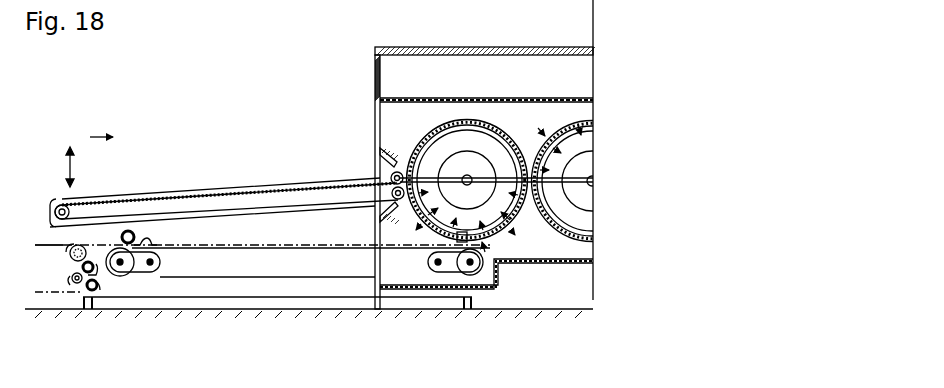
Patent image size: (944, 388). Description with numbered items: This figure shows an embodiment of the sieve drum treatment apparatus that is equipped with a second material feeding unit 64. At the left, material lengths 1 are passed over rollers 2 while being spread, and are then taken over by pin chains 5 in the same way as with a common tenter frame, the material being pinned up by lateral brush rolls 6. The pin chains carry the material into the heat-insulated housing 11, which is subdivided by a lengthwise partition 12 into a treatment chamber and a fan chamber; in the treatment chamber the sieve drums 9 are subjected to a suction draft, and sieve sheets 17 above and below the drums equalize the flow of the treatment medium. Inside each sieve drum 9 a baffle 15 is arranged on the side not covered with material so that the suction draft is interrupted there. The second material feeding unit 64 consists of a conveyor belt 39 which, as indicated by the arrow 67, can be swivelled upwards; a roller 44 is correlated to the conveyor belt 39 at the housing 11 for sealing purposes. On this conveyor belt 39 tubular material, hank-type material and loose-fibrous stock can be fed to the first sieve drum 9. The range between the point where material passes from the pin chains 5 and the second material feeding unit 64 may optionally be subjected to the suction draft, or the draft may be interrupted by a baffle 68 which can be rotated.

The material lengths 1 is at (50, 292).
The rollers 2 is at (78, 277).
The pin chains 5 is at (250, 277).
The lateral brush rolls 6 is at (128, 236).
The sieve drums 9 is at (507, 139).
The heat-insulated housing 11 is at (468, 47).
The lengthwise partition 12 is at (402, 108).
The baffle 15 is at (424, 141).
The sieve sheets 17 is at (558, 98).
The conveyor belt 39 is at (277, 198).
The roller 44 is at (390, 175).
The second material feeding unit 64 is at (373, 209).
The arrow 67 is at (68, 166).
The rotatable baffle 68 is at (441, 224).